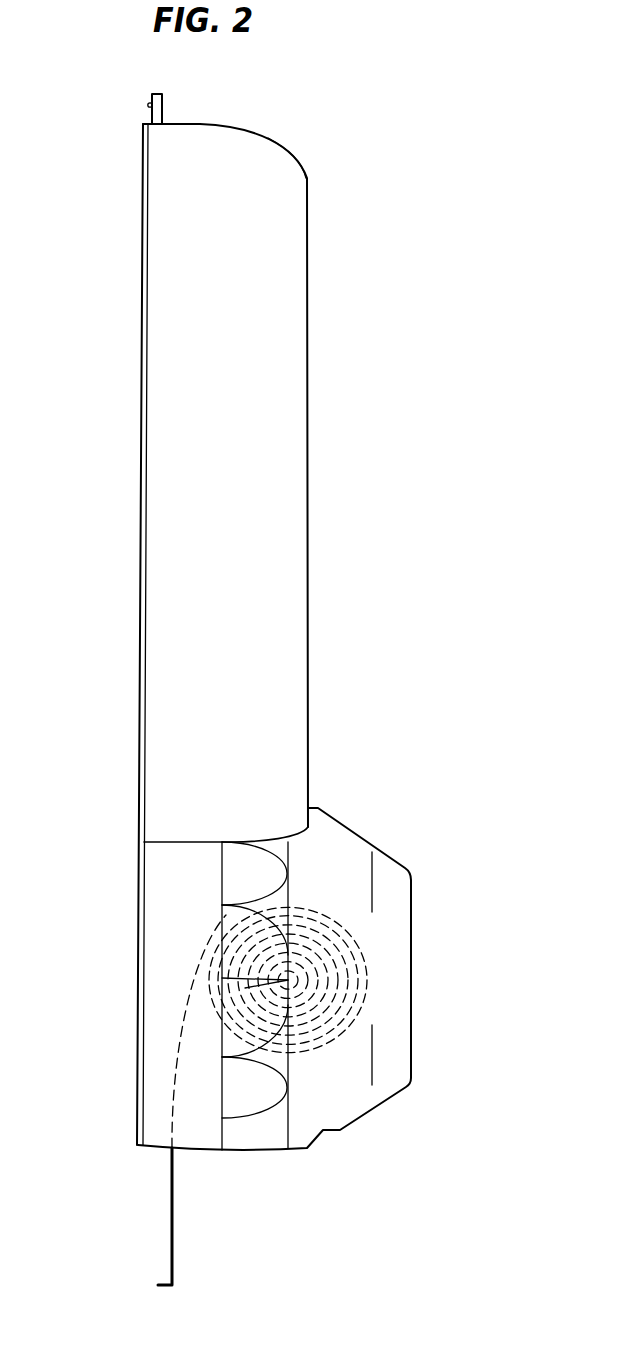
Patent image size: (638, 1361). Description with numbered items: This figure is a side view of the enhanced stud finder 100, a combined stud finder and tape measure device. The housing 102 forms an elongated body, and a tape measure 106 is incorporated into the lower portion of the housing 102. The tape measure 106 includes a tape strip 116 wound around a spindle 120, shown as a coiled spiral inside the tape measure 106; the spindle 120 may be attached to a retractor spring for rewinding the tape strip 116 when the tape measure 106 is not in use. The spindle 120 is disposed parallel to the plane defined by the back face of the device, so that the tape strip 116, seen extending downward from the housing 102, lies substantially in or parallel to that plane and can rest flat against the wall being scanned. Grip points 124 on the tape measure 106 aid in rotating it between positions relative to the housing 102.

The enhanced stud finder 100 is at (340, 146).
The housing 102 is at (308, 527).
The tape measure 106 is at (343, 853).
The tape strip 116 is at (172, 1227).
The spindle 120 is at (290, 979).
The grip points 124 is at (243, 876).